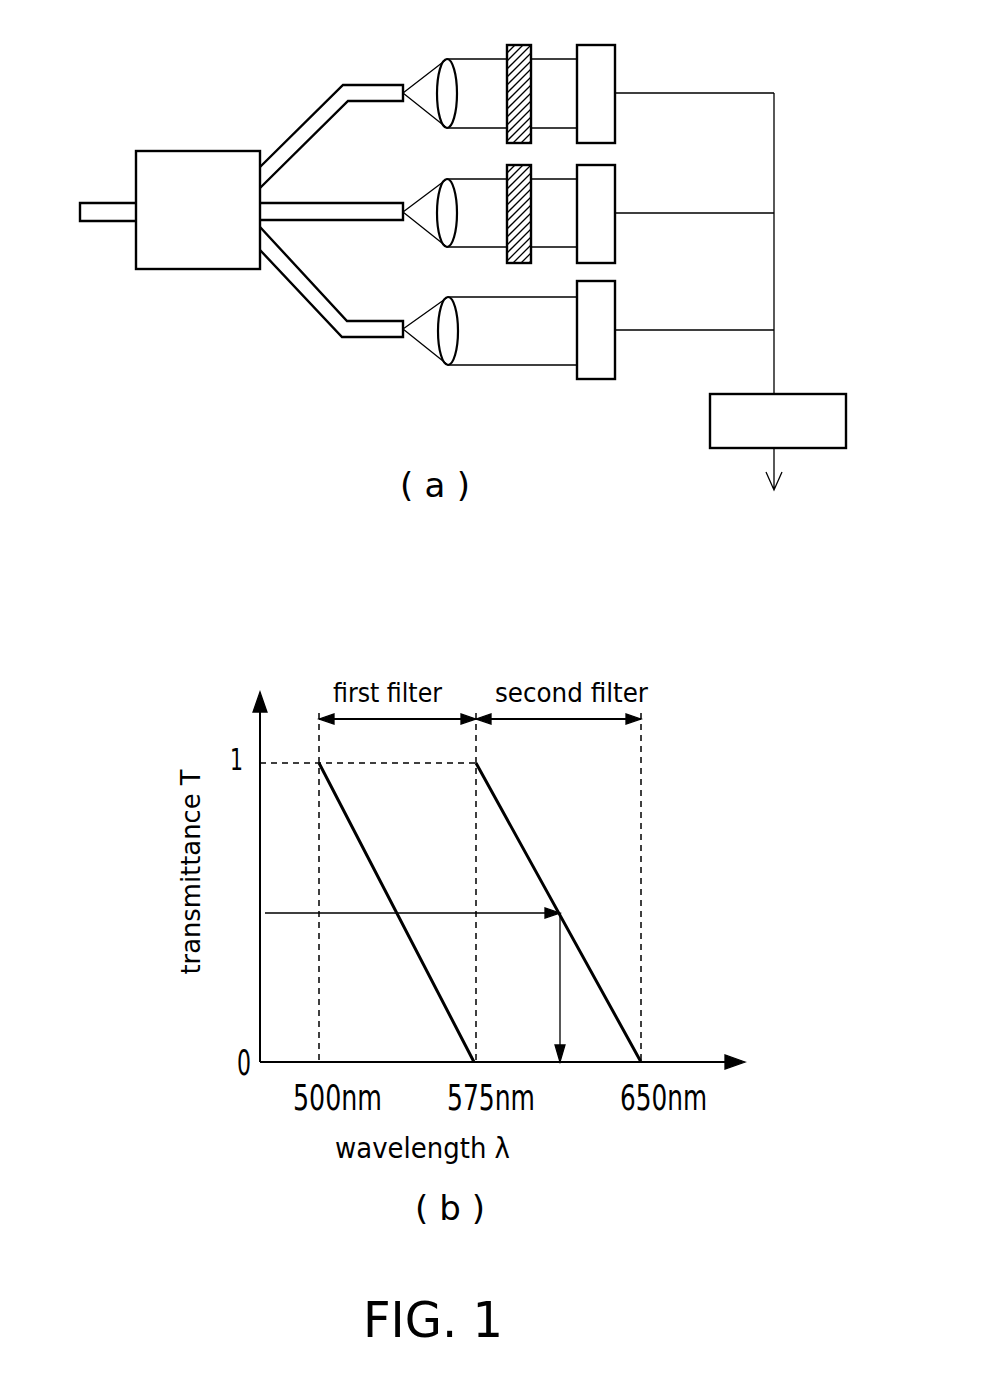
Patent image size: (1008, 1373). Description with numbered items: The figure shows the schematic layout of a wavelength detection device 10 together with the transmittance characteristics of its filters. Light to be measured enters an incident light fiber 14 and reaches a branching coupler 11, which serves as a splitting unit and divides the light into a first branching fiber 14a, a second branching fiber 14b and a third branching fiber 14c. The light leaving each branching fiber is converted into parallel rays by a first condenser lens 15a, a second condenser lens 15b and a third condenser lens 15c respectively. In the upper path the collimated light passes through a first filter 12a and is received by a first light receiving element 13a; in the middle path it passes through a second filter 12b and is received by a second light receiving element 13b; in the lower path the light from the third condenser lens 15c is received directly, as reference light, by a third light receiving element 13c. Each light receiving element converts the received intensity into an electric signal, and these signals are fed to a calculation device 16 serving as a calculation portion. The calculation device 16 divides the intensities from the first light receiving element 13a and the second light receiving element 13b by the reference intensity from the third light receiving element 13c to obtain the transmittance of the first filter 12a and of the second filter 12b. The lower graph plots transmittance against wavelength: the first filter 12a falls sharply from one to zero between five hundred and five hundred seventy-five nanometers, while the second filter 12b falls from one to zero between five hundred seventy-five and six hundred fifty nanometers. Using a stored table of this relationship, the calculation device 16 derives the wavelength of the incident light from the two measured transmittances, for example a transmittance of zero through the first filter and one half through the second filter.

The wavelength detection device 10 is at (222, 92).
The branching coupler 11 is at (195, 270).
The first filter 12a is at (507, 48).
The second filter 12b is at (507, 169).
The first light receiving element 13a is at (616, 63).
The second light receiving element 13b is at (616, 183).
The third light receiving element 13c is at (616, 305).
The incident light fiber 14 is at (108, 222).
The first branching fiber 14a is at (371, 103).
The second branching fiber 14b is at (372, 222).
The third branching fiber 14c is at (372, 339).
The first condenser lens 15a is at (437, 84).
The second condenser lens 15b is at (452, 242).
The third condenser lens 15c is at (453, 346).
The calculation device 16 is at (816, 394).